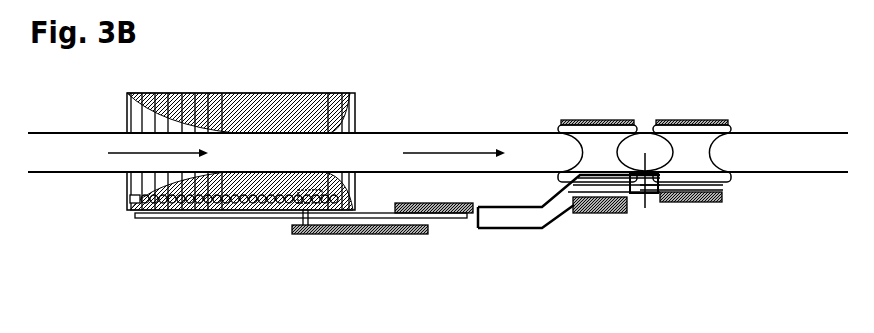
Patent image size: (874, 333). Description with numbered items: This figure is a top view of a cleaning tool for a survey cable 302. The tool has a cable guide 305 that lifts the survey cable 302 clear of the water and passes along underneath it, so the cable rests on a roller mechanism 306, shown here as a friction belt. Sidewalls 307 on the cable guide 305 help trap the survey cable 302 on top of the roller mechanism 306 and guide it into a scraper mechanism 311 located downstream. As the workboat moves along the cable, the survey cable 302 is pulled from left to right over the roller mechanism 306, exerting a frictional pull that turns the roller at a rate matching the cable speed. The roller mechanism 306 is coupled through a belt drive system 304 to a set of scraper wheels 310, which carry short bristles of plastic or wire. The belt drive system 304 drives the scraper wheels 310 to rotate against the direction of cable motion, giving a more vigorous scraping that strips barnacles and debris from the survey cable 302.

The survey cable 302 is at (80, 174).
The belt drive system 304 is at (365, 234).
The cable guide 305 is at (272, 165).
The roller mechanism 306 is at (127, 115).
The sidewalls 307 is at (240, 92).
The scraper wheels 310 is at (690, 120).
The scraper mechanism 311 is at (567, 178).